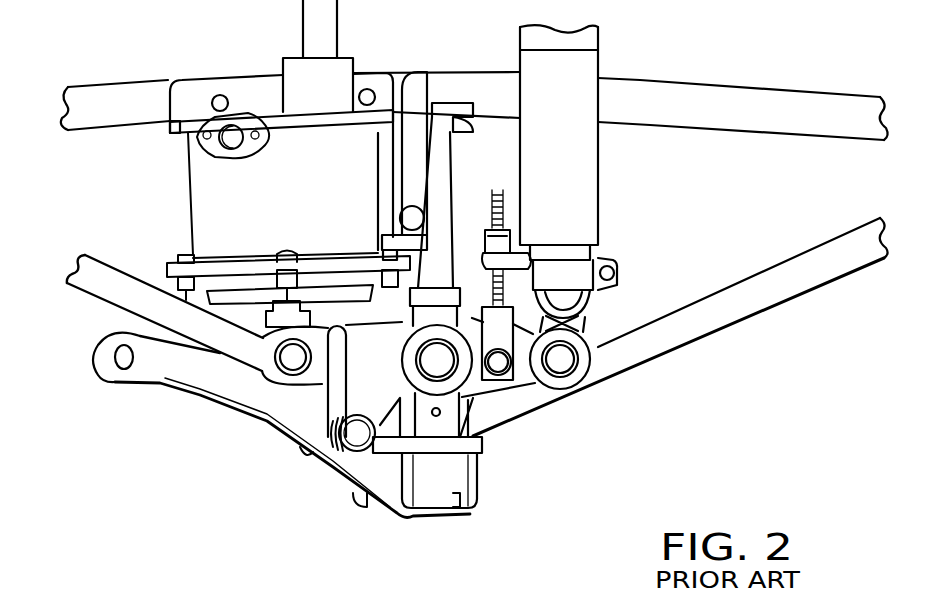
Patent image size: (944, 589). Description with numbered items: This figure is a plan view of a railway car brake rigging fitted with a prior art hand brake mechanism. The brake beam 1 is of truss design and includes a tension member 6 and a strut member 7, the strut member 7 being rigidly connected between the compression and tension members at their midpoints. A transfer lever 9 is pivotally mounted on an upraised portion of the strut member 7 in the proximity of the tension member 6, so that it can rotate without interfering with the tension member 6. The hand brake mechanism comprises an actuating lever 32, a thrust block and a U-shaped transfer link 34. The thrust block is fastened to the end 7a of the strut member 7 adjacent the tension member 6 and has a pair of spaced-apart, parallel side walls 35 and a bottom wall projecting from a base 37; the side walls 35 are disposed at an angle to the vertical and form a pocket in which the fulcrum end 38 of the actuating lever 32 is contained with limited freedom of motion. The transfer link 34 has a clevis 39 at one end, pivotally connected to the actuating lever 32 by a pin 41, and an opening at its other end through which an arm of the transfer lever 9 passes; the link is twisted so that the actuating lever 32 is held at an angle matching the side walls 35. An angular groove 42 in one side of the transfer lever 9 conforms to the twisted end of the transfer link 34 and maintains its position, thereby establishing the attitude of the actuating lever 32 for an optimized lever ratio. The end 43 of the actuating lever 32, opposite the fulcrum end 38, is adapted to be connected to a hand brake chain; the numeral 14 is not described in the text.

The brake beam 1 is at (685, 354).
The tension member 6 is at (530, 398).
The strut member 7 is at (451, 399).
The end of strut member 7a is at (408, 395).
The transfer lever 9 is at (523, 348).
The actuator unit 14 is at (216, 209).
The actuating lever 32 is at (206, 374).
The transfer link 34 is at (333, 373).
The side walls 35 is at (460, 493).
The base 37 is at (462, 447).
The fulcrum end 38 is at (447, 497).
The clevis 39 is at (325, 455).
The pin 41 is at (362, 440).
The angular groove 42 is at (347, 337).
The end of actuating lever 43 is at (105, 382).